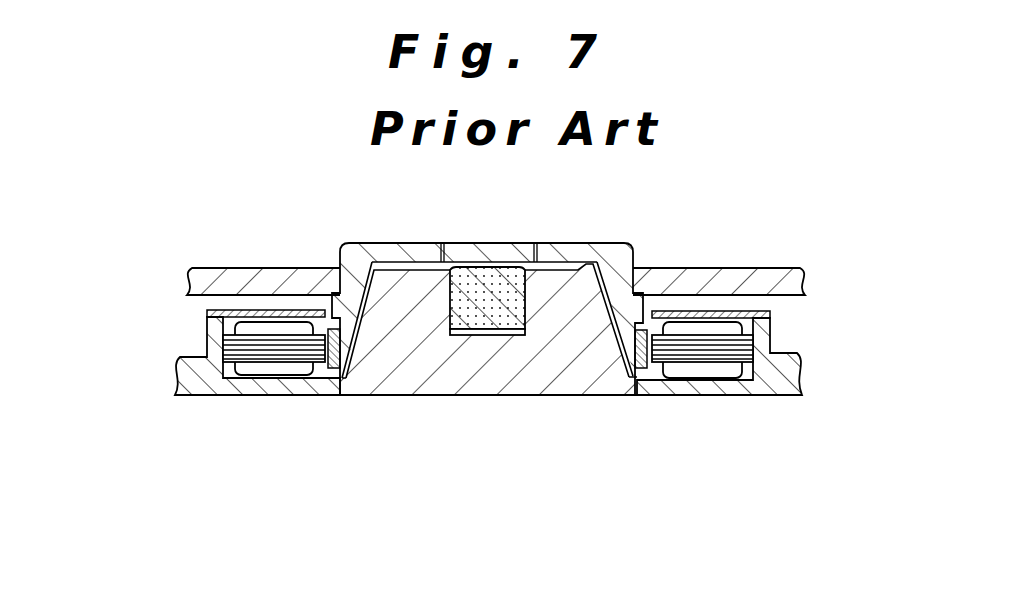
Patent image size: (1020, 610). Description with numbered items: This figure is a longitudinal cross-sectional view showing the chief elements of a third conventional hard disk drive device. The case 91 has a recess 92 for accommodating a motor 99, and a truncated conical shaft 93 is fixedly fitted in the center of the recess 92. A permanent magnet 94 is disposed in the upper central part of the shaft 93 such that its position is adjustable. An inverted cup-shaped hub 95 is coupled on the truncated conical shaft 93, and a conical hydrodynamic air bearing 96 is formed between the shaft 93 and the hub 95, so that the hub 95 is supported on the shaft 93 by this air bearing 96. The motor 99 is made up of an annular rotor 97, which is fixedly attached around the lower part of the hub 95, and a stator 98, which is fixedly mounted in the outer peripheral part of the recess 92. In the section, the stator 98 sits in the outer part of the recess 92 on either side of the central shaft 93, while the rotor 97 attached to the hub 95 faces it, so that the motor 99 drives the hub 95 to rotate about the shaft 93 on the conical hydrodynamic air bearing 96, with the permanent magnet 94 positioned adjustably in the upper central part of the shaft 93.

The case 91 is at (190, 370).
The recess 92 is at (328, 369).
The truncated conical shaft 93 is at (402, 345).
The permanent magnet 94 is at (490, 330).
The inverted cup-shaped hub 95 is at (353, 268).
The conical hydrodynamic air bearing 96 is at (612, 328).
The annular rotor 97 is at (656, 410).
The stator 98 is at (712, 352).
The motor 99 is at (712, 431).